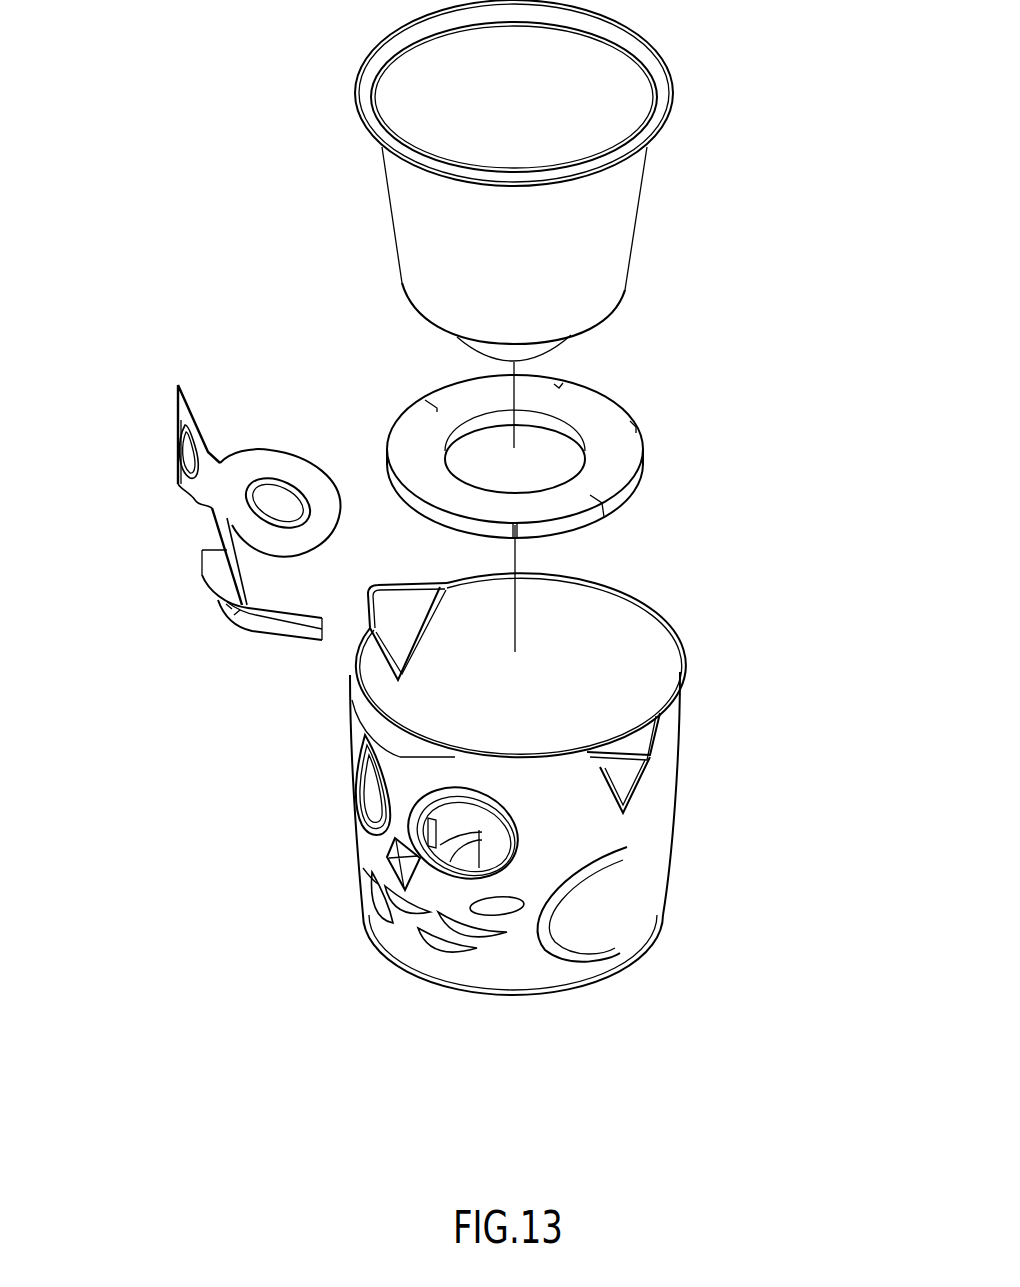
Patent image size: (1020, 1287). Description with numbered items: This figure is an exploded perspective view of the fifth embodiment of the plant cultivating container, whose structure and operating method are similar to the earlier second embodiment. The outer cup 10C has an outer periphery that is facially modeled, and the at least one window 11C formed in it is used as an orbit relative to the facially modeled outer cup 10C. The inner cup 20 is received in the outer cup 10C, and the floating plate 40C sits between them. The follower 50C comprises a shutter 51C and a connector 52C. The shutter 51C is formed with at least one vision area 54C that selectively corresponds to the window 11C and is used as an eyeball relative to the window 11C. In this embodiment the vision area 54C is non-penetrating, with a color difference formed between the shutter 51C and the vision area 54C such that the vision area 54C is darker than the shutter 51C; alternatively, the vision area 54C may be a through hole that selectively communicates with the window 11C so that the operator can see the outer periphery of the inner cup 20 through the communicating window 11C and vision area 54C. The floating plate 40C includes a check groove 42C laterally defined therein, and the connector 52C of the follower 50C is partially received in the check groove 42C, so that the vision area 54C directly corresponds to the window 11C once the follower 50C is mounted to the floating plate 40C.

The inner cup 20 is at (423, 217).
The floating plate 40C is at (577, 484).
The check groove 42C is at (450, 520).
The follower 50C is at (198, 546).
The shutter 51C is at (186, 487).
The connector 52C is at (270, 627).
The vision area 54C is at (285, 498).
The outer cup 10C is at (528, 784).
The window 11C is at (370, 790).